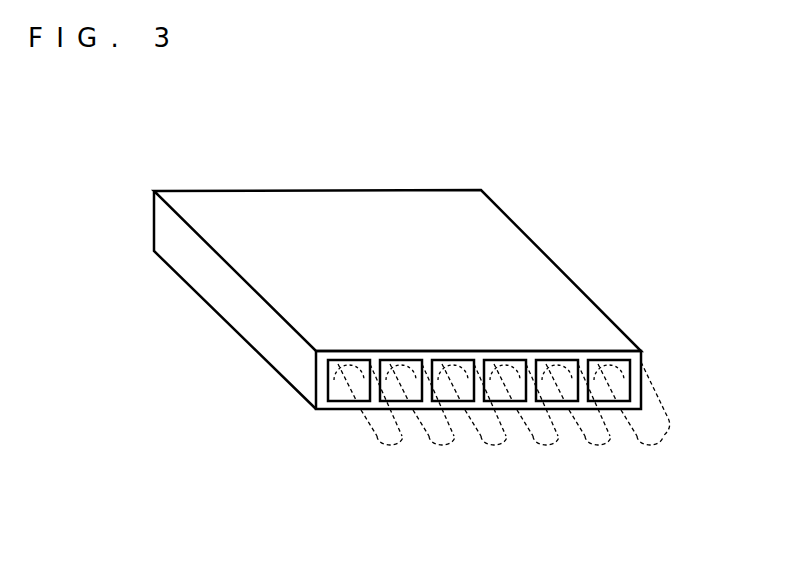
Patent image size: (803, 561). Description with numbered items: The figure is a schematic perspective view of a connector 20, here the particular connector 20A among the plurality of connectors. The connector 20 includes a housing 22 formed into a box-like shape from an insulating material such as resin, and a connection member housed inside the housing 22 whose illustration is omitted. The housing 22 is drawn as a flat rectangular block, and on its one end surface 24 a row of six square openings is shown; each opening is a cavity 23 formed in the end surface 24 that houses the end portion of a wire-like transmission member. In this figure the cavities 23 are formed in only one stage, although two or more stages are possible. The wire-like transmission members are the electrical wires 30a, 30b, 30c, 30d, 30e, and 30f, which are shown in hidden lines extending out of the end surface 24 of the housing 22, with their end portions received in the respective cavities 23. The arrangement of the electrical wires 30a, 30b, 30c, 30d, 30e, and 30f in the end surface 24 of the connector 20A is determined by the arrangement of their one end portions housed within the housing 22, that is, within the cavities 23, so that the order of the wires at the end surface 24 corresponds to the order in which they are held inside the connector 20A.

The connector 20 is at (412, 324).
The connector 20A is at (412, 324).
The housing 22 is at (547, 250).
The cavity 23 is at (393, 359).
The end surface 24 is at (317, 412).
The electrical wire 30a is at (638, 447).
The electrical wire 30b is at (585, 447).
The electrical wire 30c is at (531, 447).
The electrical wire 30d is at (482, 447).
The electrical wire 30e is at (430, 447).
The electrical wire 30f is at (372, 447).